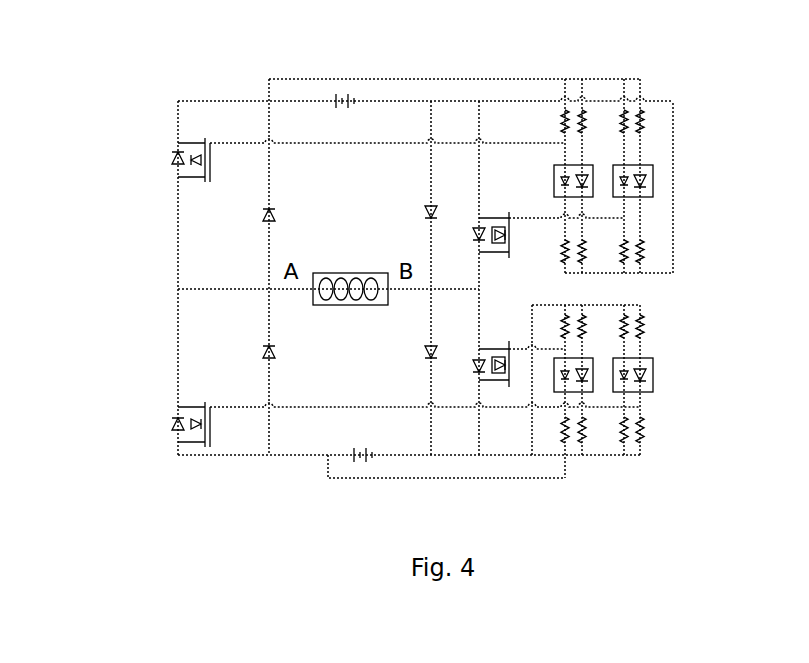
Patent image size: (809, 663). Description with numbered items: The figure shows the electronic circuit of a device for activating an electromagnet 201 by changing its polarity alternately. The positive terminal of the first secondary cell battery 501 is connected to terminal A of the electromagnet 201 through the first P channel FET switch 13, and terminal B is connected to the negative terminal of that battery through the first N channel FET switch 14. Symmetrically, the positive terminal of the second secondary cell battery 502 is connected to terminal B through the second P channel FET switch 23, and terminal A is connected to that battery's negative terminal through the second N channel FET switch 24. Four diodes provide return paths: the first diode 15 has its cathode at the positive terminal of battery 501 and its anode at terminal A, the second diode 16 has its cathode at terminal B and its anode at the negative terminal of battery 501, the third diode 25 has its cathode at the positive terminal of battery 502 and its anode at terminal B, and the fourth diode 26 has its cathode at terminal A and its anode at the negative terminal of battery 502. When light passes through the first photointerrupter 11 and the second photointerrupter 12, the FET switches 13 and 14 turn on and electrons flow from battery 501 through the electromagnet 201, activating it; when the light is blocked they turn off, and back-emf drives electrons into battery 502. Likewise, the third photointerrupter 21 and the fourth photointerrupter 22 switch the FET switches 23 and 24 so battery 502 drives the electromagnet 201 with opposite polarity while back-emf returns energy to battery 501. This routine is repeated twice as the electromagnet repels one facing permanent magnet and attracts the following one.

The photointerrupter-1 11 is at (602, 155).
The photointerrupter-2 12 is at (688, 125).
The first P channel FET switch 13 is at (172, 152).
The first N channel FET switch 14 is at (522, 238).
The first diode 15 is at (257, 208).
The second diode 16 is at (436, 199).
The photointerrupter-3 21 is at (603, 352).
The photointerrupter-4 22 is at (663, 353).
The second P channel FET switch 23 is at (517, 383).
The second N channel FET switch 24 is at (166, 420).
The third diode 25 is at (438, 372).
The fourth diode 26 is at (264, 368).
The electromagnet 201 is at (300, 309).
The secondary cell battery-1 501 is at (344, 88).
The secondary cell battery-2 502 is at (361, 470).